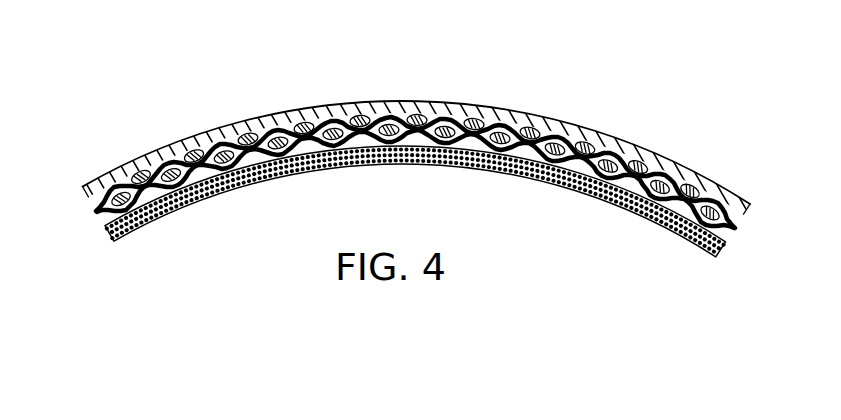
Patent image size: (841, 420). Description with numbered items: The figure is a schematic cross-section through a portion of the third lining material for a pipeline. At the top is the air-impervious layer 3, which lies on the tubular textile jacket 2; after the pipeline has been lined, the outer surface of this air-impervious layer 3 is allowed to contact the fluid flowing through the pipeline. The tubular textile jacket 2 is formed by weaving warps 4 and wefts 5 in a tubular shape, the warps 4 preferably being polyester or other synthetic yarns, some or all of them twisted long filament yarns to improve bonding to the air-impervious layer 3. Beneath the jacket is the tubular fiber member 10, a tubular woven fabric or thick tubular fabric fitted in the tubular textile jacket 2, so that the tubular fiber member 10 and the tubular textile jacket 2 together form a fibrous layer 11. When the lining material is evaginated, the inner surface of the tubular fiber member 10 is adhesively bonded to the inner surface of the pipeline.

The tubular textile jacket 2 is at (73, 212).
The air-impervious layer 3 is at (622, 149).
The warps 4 is at (362, 106).
The wefts 5 is at (455, 122).
The tubular fiber member 10 is at (203, 200).
The fibrous layer 11 is at (762, 233).